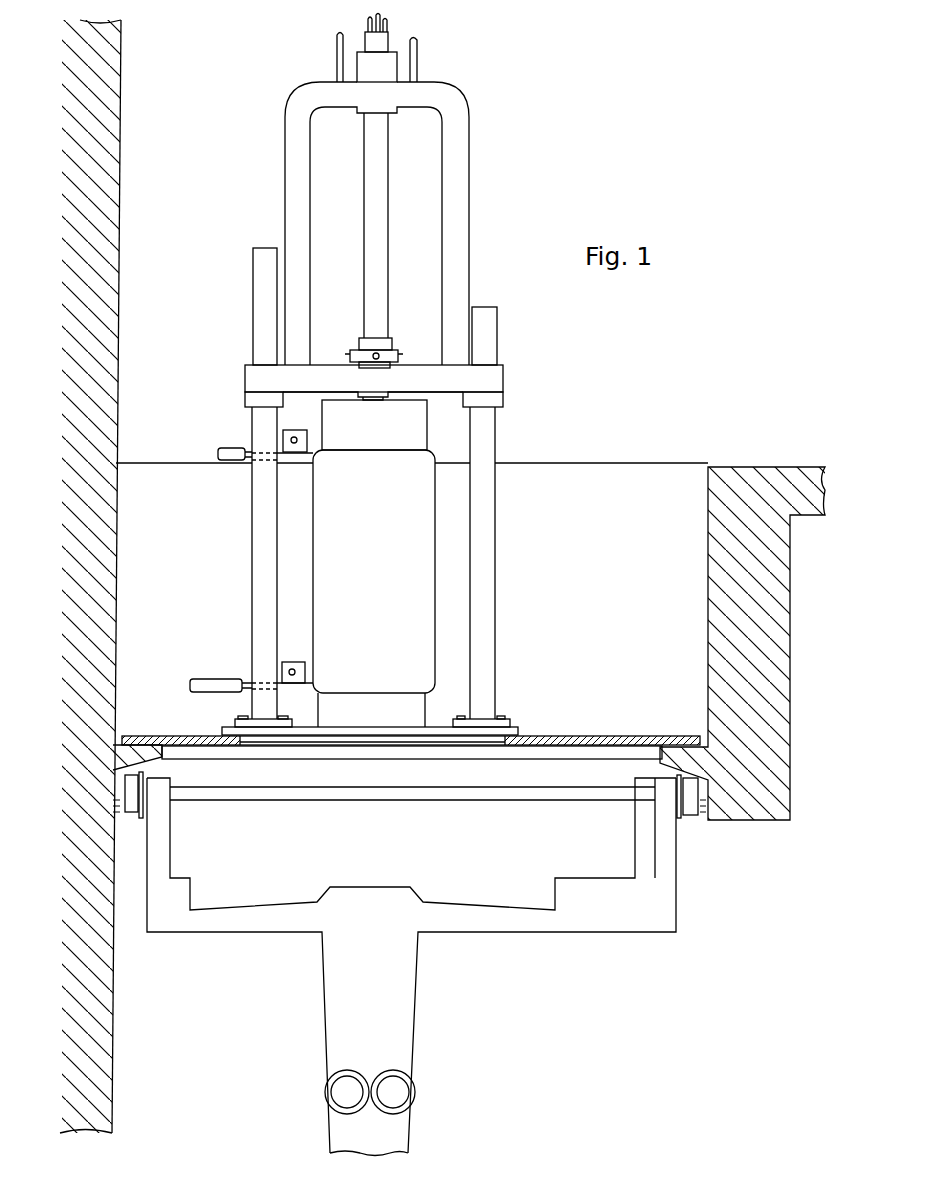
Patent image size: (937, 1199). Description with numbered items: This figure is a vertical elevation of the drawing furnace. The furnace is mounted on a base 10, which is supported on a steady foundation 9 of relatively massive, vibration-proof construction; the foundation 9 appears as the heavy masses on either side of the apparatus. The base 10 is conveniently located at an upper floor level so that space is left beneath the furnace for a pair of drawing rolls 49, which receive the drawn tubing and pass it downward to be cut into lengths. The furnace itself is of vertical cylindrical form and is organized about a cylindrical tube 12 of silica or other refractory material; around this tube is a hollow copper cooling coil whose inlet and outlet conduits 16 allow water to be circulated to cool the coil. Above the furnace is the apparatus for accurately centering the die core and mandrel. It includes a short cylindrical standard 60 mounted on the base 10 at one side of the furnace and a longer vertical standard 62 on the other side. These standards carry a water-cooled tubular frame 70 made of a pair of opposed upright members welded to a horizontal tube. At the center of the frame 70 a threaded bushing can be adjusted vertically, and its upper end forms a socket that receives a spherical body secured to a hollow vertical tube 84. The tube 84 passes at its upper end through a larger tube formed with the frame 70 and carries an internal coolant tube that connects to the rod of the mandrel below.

The foundation 9 is at (108, 600).
The base 10 is at (345, 728).
The cylindrical tube 12 is at (382, 574).
The inlet and outlet conduits 16 is at (230, 447).
The drawing rolls 49 is at (389, 1083).
The short cylindrical standard 60 is at (487, 338).
The longer vertical standard 62 is at (258, 282).
The water-cooled tubular frame 70 is at (467, 213).
The hollow vertical tube 84 is at (390, 166).